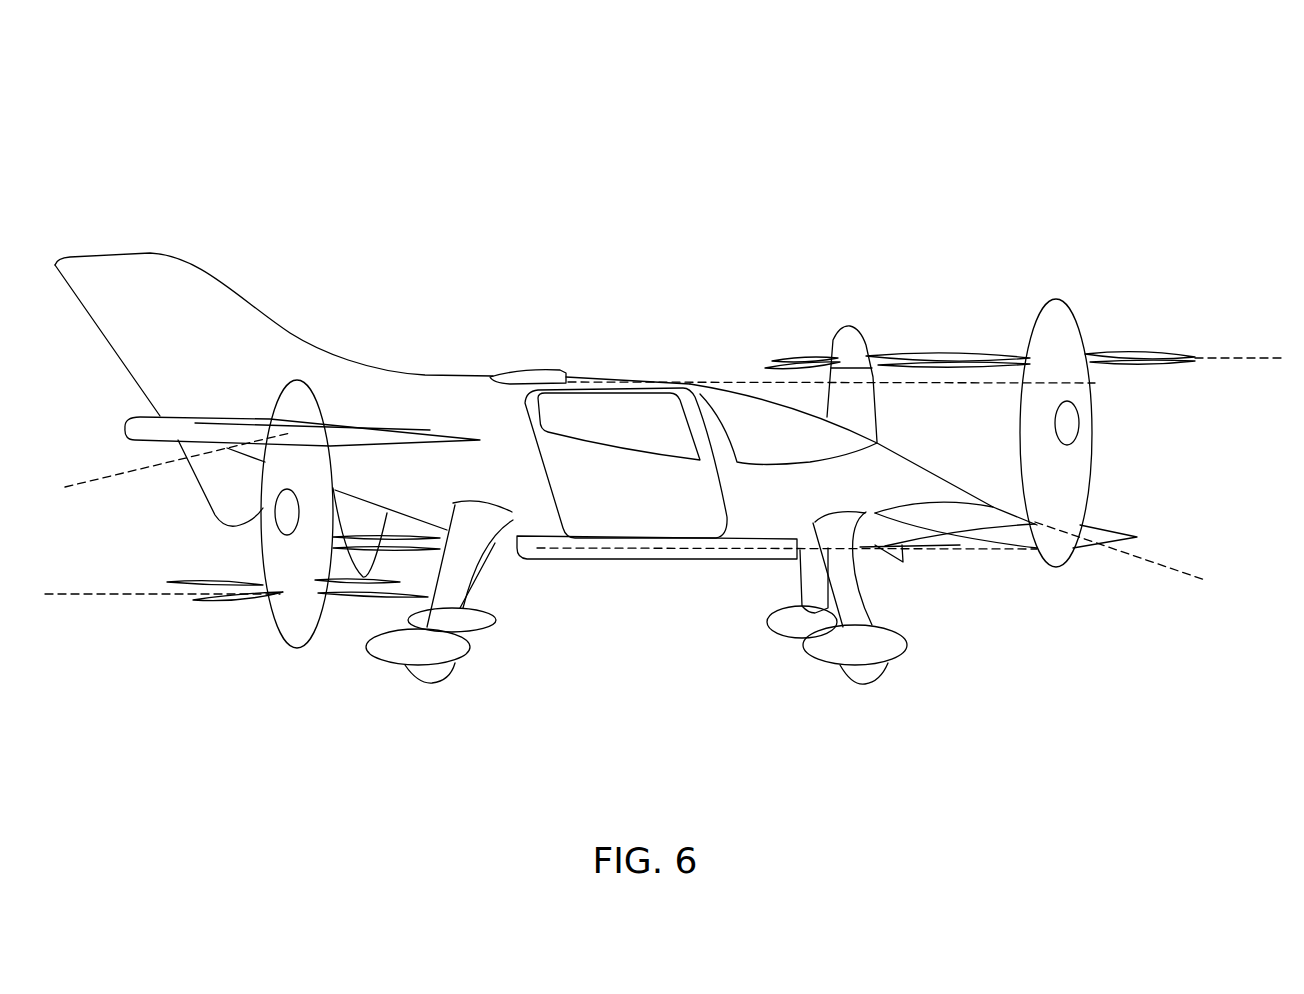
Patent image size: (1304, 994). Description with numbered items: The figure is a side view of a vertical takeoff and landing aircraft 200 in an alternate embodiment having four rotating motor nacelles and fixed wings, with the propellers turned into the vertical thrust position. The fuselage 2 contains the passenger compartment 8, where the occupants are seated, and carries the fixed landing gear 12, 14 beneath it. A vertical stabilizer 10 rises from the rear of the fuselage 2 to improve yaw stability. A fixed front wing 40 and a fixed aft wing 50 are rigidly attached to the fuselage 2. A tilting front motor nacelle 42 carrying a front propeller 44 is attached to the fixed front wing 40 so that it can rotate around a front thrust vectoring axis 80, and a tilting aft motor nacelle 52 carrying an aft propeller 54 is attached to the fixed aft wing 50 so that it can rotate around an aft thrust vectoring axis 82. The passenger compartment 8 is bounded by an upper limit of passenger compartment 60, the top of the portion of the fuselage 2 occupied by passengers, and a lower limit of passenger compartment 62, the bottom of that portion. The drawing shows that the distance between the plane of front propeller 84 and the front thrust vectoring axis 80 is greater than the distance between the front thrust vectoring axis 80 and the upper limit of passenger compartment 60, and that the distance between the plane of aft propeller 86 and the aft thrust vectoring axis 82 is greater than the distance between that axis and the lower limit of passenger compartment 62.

The vertical takeoff and landing aircraft 200 is at (1048, 146).
The vertical stabilizer 10 is at (98, 270).
The fuselage 2 is at (600, 378).
The passenger compartment 8 is at (645, 525).
The upper limit of passenger compartment 60 is at (718, 382).
The lower limit of passenger compartment 62 is at (590, 548).
The fixed aft wing 50 is at (405, 440).
The tilting aft motor nacelle 52 is at (278, 575).
The aft propeller 54 is at (178, 582).
The aft thrust vectoring axis 82 is at (73, 486).
The plane of aft propeller 86 is at (86, 592).
The fixed landing gear 12 is at (432, 680).
The fixed landing gear 14 is at (865, 687).
The tilting front motor nacelle 42 is at (858, 392).
The front propeller 44 is at (768, 358).
The plane of front propeller 84 is at (1250, 356).
The fixed front wing 40 is at (980, 520).
The front thrust vectoring axis 80 is at (1160, 558).